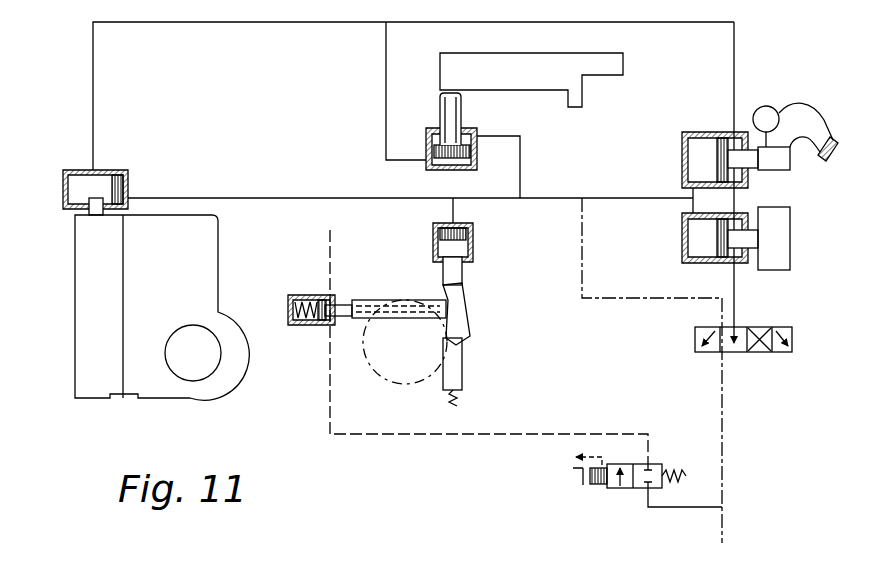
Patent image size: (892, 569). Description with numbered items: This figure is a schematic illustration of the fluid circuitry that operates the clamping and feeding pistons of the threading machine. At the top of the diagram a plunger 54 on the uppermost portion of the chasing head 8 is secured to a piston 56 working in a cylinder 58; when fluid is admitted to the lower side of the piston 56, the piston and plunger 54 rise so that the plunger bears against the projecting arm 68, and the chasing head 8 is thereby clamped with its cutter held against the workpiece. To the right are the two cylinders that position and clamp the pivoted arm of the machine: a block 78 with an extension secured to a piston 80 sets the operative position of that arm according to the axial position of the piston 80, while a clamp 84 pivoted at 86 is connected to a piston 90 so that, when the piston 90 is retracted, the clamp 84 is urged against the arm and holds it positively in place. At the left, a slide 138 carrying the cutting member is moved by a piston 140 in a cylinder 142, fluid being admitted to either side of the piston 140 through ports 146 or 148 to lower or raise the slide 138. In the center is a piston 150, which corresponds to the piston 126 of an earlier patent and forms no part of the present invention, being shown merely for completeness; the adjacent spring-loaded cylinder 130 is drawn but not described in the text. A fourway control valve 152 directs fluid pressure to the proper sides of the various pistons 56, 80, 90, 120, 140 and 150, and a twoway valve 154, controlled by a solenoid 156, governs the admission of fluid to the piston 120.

The chasing head 8 is at (166, 287).
The plunger 54 is at (462, 116).
The piston 56 is at (472, 154).
The cylinder 58 is at (450, 133).
The projecting arm 68 is at (466, 66).
The block 78 is at (770, 270).
The piston 80 is at (719, 264).
The clamp 84 is at (807, 122).
The pivot 86 is at (765, 116).
The piston 90 is at (708, 132).
The piston 120 is at (325, 298).
The piston 126 is at (305, 326).
The cylinder 130 is at (300, 311).
The slide 138 is at (130, 307).
The piston 140 is at (116, 177).
The cylinder 142 is at (124, 200).
The port 146 is at (93, 73).
The port 148 is at (262, 196).
The piston 150 is at (474, 246).
The fourway control valve 152 is at (781, 363).
The twoway valve 154 is at (641, 490).
The solenoid 156 is at (586, 488).